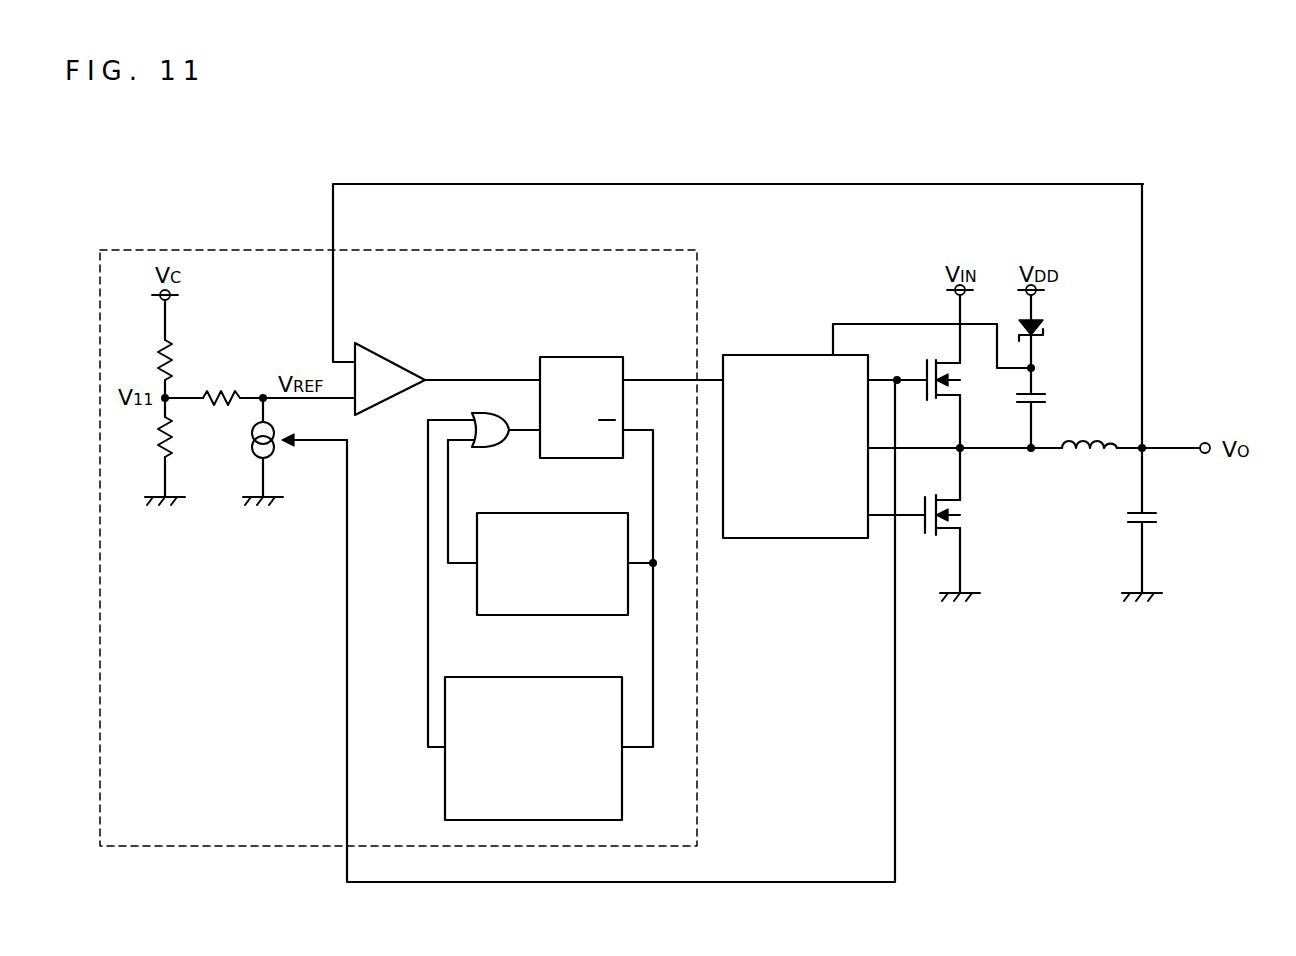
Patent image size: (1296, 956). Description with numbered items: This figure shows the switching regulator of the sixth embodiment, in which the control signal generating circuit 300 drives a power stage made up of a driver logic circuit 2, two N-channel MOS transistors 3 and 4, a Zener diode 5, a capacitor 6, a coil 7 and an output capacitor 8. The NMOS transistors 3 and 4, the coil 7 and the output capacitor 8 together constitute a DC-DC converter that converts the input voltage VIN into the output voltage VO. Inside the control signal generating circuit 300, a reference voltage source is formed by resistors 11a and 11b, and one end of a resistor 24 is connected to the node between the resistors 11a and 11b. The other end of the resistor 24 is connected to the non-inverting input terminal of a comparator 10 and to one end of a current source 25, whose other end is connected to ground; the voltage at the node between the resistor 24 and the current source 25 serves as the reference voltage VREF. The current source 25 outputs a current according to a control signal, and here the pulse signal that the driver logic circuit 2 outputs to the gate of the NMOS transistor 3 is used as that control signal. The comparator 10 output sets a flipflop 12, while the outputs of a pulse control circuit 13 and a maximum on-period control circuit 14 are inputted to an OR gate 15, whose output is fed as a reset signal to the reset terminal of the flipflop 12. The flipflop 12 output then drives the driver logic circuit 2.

The control signal generating circuit 300 is at (478, 250).
The comparator 10 is at (388, 356).
The resistor 11a is at (154, 362).
The resistor 11b is at (157, 448).
The resistor 24 is at (222, 384).
The current source 25 is at (250, 440).
The flipflop 12 is at (578, 356).
The pulse control circuit 13 is at (550, 516).
The maximum on-period control circuit 14 is at (530, 677).
The OR gate 15 is at (481, 449).
The driver logic circuit 2 is at (791, 356).
The N-channel MOS transistor 3 is at (964, 392).
The N-channel MOS transistor 4 is at (964, 525).
The Zener diode 5 is at (1046, 330).
The capacitor 6 is at (1049, 400).
The coil 7 is at (1088, 458).
The output capacitor 8 is at (1160, 518).